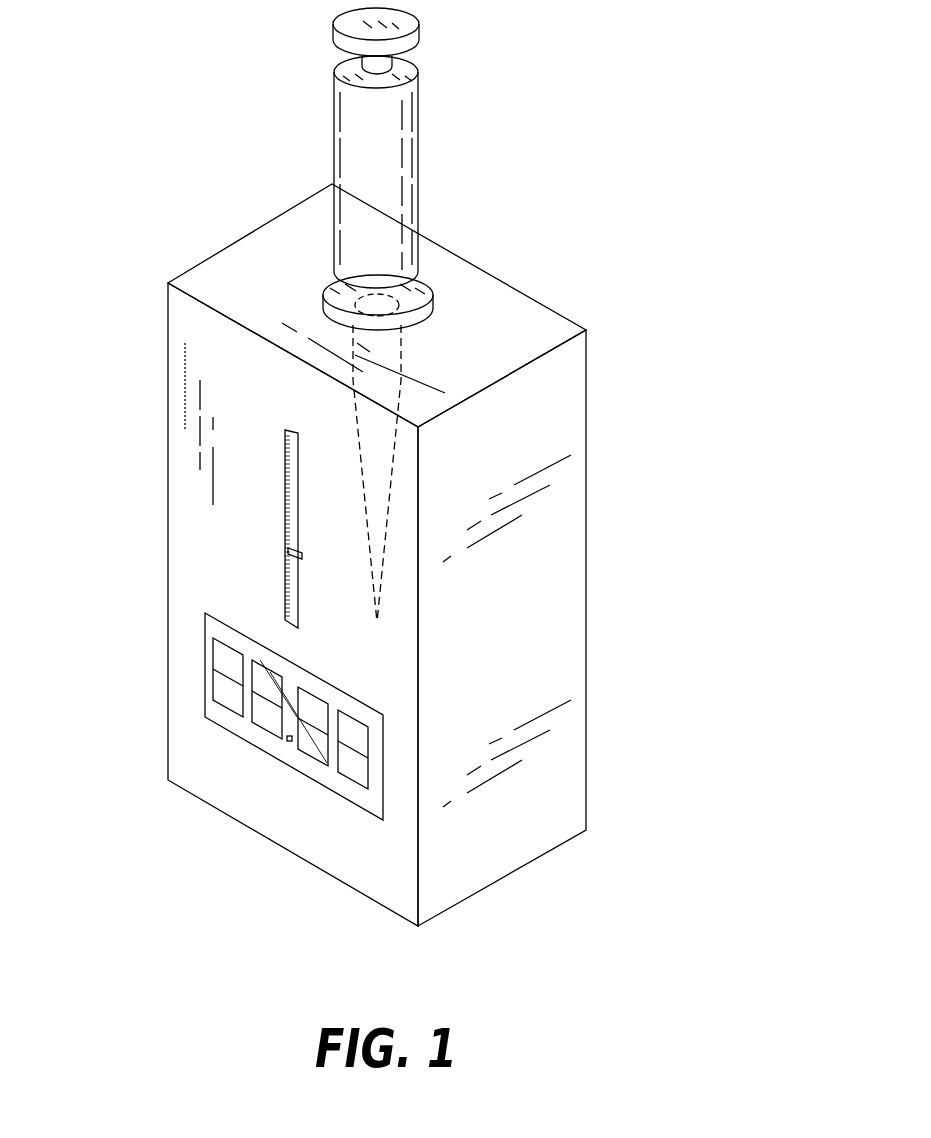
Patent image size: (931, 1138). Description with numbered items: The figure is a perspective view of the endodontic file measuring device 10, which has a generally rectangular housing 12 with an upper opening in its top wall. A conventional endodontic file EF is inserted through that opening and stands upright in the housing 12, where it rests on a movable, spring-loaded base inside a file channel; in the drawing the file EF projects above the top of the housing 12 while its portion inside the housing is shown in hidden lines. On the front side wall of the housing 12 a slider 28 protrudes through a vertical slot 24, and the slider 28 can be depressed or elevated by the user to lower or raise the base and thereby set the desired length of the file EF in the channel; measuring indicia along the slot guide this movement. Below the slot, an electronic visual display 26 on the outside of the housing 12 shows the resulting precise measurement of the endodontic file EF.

The endodontic file measuring device 10 is at (436, 467).
The housing 12 is at (588, 578).
The slot / level indicator window 24 is at (285, 428).
The electronic visual display 26 is at (205, 672).
The slider 28 is at (288, 551).
The endodontic file EF is at (420, 158).